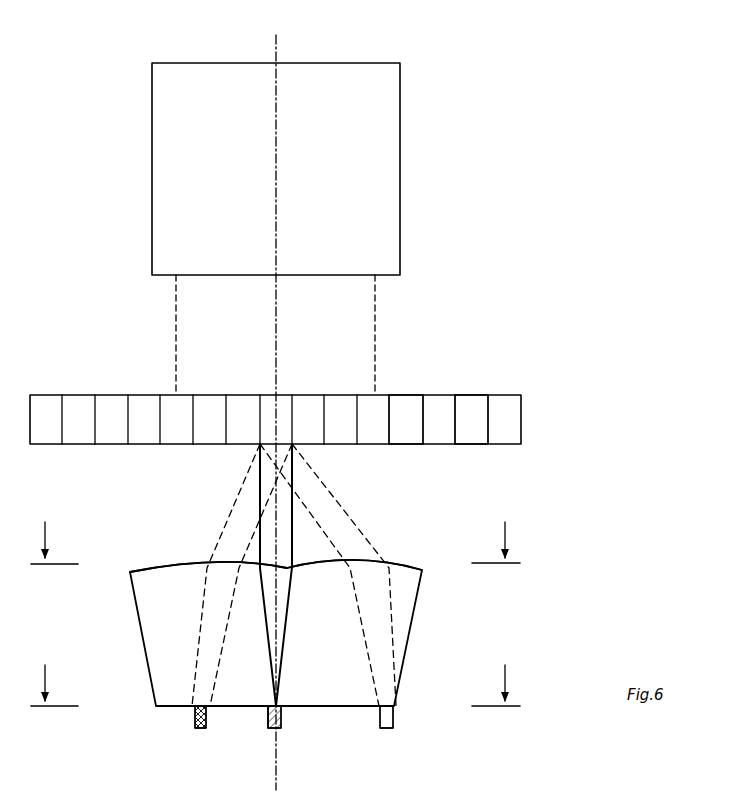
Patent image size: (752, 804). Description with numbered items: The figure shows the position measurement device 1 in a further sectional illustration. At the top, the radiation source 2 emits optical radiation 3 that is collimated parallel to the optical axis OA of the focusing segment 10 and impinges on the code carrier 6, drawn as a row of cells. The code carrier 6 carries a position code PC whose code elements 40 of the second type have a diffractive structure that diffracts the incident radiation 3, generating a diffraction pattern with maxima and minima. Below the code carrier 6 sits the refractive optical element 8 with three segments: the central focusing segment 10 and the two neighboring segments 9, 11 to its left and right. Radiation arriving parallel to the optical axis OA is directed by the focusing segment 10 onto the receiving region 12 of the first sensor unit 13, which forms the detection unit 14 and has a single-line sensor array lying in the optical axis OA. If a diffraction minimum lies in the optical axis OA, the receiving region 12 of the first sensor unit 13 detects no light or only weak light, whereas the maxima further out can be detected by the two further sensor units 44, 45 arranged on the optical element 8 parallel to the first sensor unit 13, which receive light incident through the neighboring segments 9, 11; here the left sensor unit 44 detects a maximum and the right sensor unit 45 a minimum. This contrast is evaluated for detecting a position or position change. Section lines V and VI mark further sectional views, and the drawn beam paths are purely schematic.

The position measurement device 1 is at (523, 160).
The radiation source 2 is at (400, 103).
The optical radiation 3 is at (377, 350).
The code carrier 6 is at (527, 412).
The code elements of a second type 40 is at (472, 405).
The position code PC is at (408, 412).
The refractive optical element 8 is at (410, 646).
The neighboring segment 9 is at (180, 601).
The central focusing segment 10 is at (272, 580).
The neighboring segment 11 is at (406, 577).
The receiving region 12 is at (270, 716).
The first sensor unit 13 is at (283, 716).
The detection unit 14 is at (201, 734).
The second sensor unit 44 is at (196, 718).
The third sensor unit 45 is at (393, 716).
The optical axis OA is at (277, 36).
The section line V is at (275, 542).
The section line VI is at (275, 685).